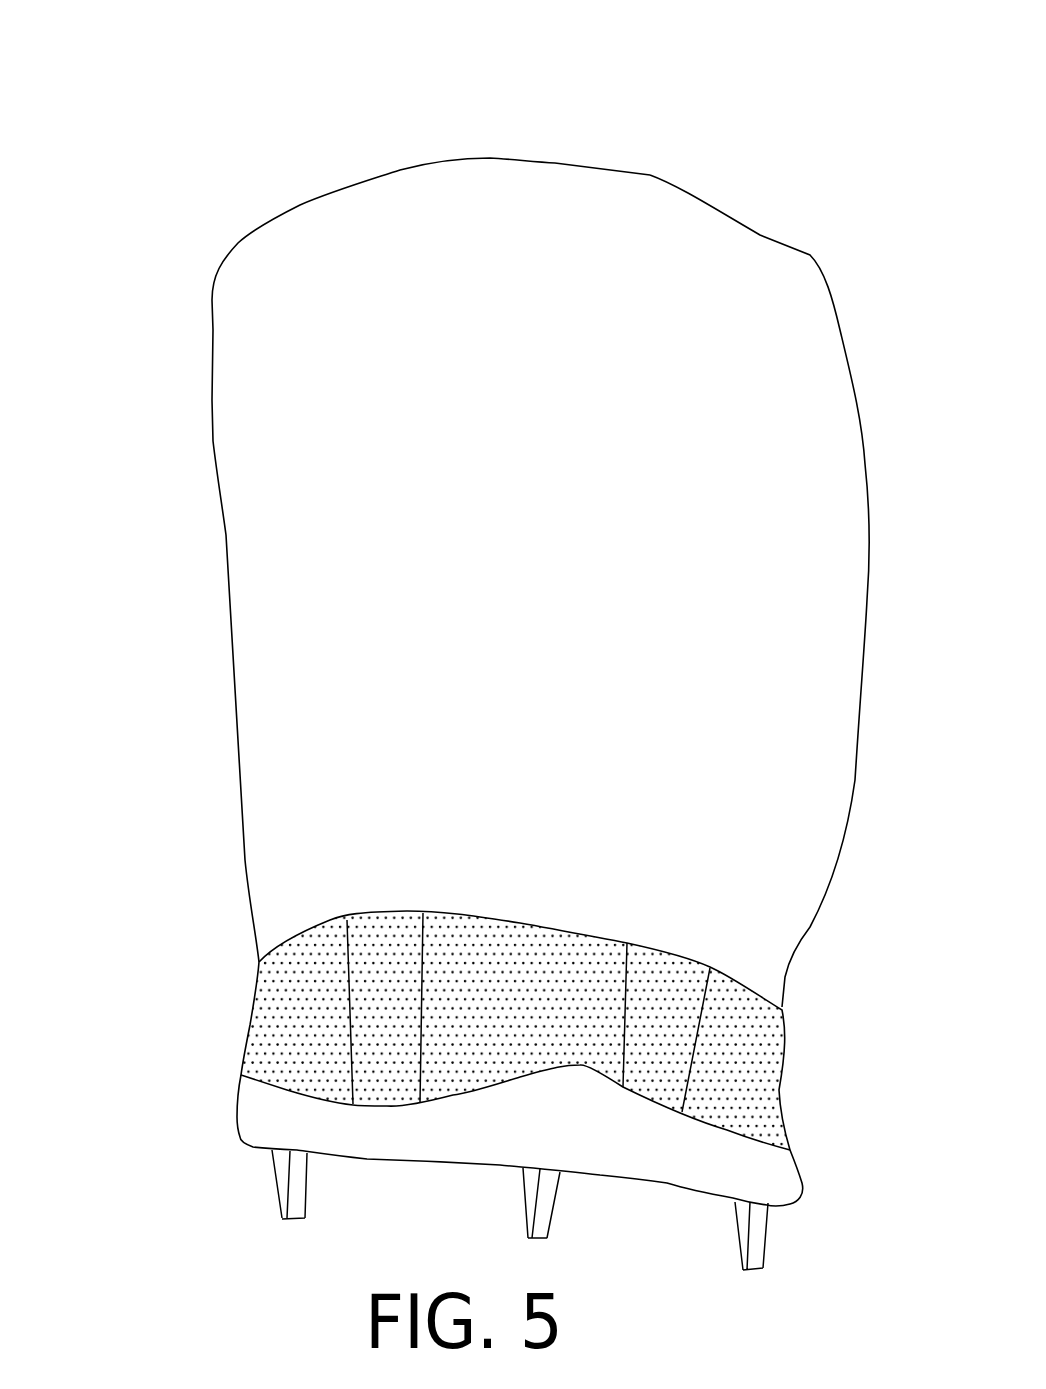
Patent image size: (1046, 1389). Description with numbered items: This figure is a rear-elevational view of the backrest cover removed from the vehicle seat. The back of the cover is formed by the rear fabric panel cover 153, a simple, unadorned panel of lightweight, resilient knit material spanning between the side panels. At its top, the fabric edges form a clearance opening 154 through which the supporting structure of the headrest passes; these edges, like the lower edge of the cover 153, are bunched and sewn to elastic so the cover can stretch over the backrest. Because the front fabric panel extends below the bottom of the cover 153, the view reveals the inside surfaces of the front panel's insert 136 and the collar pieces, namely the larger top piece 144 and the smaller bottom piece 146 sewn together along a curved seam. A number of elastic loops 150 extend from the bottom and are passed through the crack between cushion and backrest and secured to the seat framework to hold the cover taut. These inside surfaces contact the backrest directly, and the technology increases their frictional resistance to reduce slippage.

The clearance opening 154 is at (555, 160).
The rear fabric panel cover 153 is at (387, 592).
The bottom piece 146 is at (303, 1050).
The top piece 144 is at (383, 1060).
The insert 136 is at (557, 1010).
The elastic loops 150 is at (295, 1213).